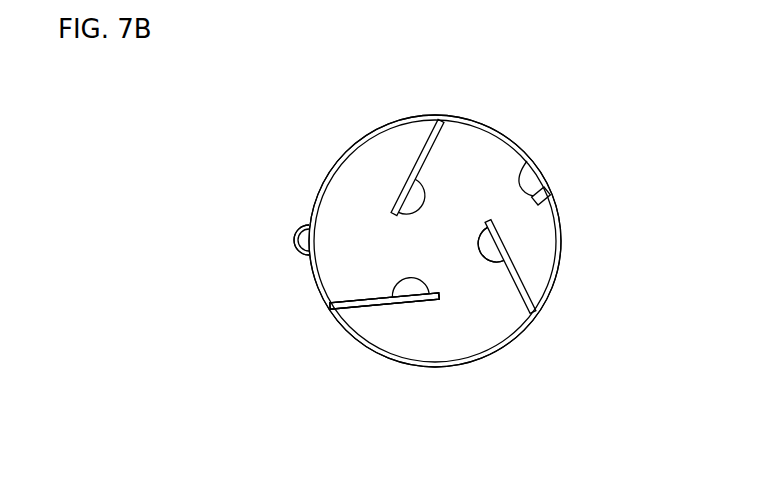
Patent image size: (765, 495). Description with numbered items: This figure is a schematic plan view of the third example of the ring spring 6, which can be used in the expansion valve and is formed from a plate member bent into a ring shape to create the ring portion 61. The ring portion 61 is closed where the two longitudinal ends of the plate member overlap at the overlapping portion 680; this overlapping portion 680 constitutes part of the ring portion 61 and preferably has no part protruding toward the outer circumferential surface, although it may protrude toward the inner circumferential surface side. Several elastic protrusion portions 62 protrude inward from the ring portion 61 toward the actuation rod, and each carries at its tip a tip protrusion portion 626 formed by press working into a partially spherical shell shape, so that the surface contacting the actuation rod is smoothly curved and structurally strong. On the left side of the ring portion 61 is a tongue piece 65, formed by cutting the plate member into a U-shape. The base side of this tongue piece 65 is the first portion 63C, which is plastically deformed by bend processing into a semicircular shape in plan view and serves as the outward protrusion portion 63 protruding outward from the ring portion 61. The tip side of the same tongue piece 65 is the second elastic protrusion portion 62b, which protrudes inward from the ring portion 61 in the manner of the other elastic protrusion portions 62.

The ring spring 6 is at (343, 93).
The ring portion 61 is at (562, 234).
The elastic protrusion portion 62 is at (516, 290).
The second elastic protrusion portion 62b is at (407, 306).
The tip protrusion portion 626 is at (481, 242).
The outward protrusion portion 63 is at (297, 248).
The first portion 63C is at (297, 232).
The tongue piece 65 is at (368, 310).
The overlapping portion 680 is at (520, 168).